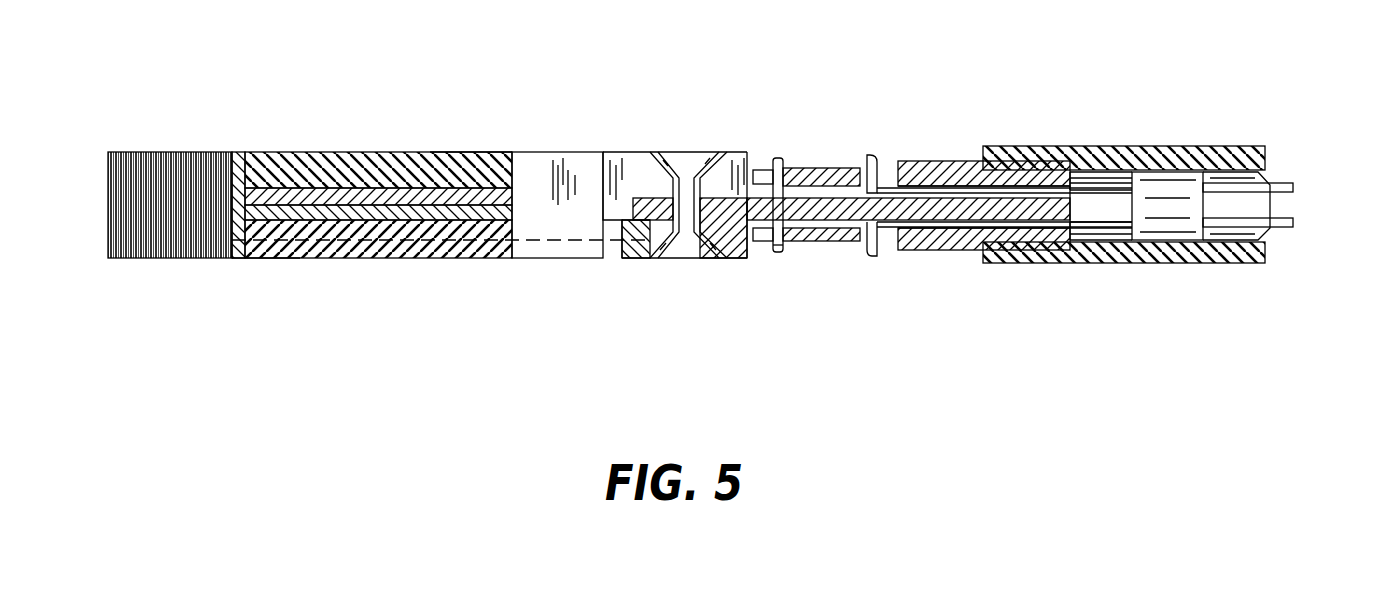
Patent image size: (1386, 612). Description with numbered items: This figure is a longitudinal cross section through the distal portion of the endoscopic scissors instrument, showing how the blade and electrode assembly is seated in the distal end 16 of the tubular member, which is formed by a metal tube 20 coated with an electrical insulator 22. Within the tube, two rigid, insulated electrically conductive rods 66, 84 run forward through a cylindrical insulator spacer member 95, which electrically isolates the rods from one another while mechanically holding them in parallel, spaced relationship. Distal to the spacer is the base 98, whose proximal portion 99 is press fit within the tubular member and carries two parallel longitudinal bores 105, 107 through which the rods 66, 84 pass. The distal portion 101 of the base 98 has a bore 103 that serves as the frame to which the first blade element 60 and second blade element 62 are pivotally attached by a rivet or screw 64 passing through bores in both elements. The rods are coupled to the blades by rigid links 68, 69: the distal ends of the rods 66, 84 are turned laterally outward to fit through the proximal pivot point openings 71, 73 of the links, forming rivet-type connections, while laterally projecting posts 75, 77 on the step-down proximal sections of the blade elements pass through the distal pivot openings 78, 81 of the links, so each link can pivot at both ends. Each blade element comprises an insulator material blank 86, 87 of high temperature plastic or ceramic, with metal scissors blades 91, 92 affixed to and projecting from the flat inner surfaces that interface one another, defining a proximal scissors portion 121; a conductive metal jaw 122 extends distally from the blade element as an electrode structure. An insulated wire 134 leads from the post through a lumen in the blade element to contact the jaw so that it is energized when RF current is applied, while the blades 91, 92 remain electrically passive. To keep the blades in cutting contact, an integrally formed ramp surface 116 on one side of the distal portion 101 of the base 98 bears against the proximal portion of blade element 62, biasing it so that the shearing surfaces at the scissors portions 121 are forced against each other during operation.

The conductive metal jaw 122 is at (150, 152).
The second blade element 62 is at (243, 152).
The insulator material blank 87 is at (372, 152).
The proximal scissors portion 121 is at (462, 155).
The metal scissors blade 92 is at (285, 190).
The metal scissors blade 91 is at (368, 258).
The insulator material blank 86 is at (437, 258).
The first blade element 60 is at (281, 258).
The insulated wire 134 is at (492, 258).
The ramp surface 116 is at (542, 225).
The distal portion of base 101 is at (640, 190).
The rivet or screw 64 is at (663, 152).
The bore 103 is at (722, 152).
The distal pivot opening 78 is at (774, 152).
The laterally projecting post 77 is at (781, 152).
The distal pivot opening 81 is at (777, 253).
The laterally projecting post 75 is at (780, 252).
The rigid link 69 is at (838, 168).
The rigid link 68 is at (848, 242).
The proximal pivot point opening 73 is at (878, 157).
The proximal pivot point opening 71 is at (876, 250).
The longitudinal bore 107 is at (1010, 165).
The longitudinal bore 105 is at (940, 227).
The base 98 is at (960, 161).
The distal end of tubular member 16 is at (1047, 200).
The proximal portion of base 99 is at (1100, 165).
The electrically conductive rod 84 is at (1128, 172).
The electrically conductive rod 66 is at (1115, 226).
The cylindrical insulator spacer member 95 is at (1187, 168).
The electrical insulator 22 is at (1248, 147).
The metal tube 20 is at (1272, 175).